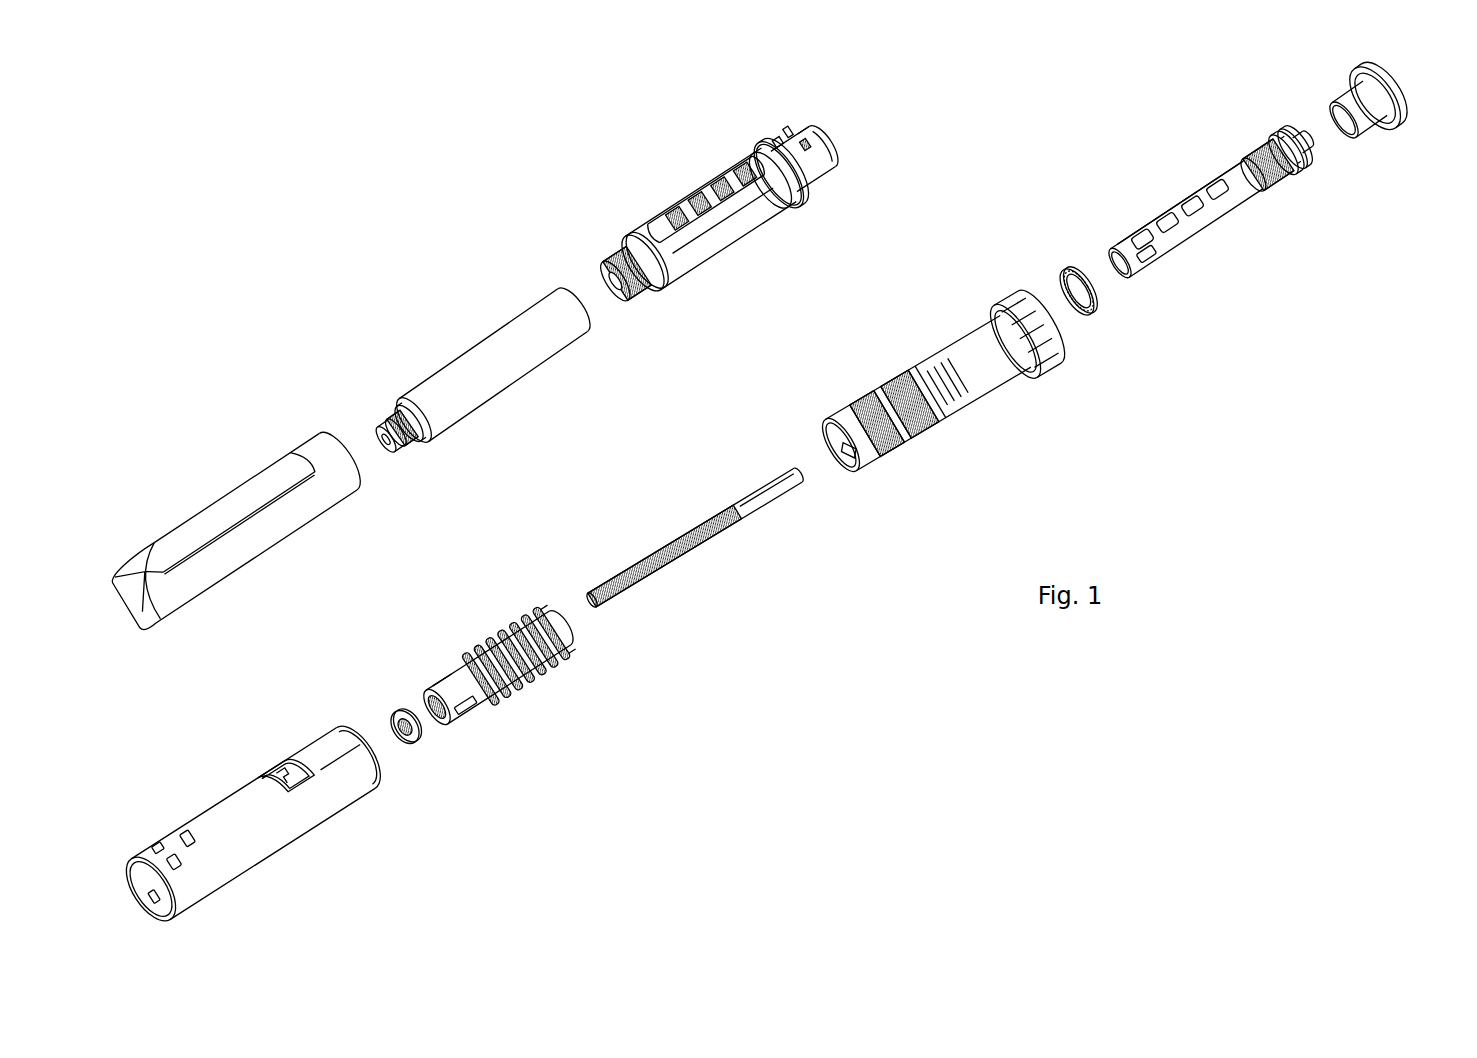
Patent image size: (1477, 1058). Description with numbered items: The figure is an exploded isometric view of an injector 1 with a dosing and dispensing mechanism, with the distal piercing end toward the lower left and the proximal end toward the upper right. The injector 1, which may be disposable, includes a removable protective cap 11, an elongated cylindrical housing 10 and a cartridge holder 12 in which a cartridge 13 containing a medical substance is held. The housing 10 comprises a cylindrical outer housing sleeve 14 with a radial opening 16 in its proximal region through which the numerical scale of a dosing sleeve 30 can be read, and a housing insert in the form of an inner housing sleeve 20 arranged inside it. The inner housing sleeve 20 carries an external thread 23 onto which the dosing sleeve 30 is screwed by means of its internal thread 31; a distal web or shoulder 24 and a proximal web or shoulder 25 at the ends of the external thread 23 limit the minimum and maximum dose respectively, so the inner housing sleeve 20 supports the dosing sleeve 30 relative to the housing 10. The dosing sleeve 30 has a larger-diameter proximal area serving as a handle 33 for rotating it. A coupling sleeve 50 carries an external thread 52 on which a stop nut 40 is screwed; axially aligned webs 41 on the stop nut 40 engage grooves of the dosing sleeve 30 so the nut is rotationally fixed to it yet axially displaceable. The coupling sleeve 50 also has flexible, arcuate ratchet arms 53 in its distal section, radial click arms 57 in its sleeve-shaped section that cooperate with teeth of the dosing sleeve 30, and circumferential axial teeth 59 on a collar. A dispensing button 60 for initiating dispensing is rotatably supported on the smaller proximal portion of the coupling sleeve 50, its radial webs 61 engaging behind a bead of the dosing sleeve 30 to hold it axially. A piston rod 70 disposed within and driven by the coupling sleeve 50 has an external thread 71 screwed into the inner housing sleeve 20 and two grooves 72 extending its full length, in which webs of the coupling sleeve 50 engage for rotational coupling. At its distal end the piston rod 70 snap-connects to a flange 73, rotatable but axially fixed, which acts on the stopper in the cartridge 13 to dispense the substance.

The injector 1 is at (331, 319).
The housing 10 is at (253, 794).
The protective cap 11 is at (232, 505).
The cartridge holder 12 is at (707, 200).
The cartridge 13 is at (480, 360).
The outer housing sleeve 14 is at (230, 800).
The opening 16 is at (294, 762).
The inner housing sleeve 20 is at (516, 681).
The external thread 23 is at (485, 645).
The distal web or shoulder 24 is at (468, 710).
The proximal web or shoulder 25 is at (572, 657).
The dosing sleeve 30 is at (944, 383).
The internal thread 31 is at (843, 460).
The handle 33 is at (1020, 315).
The stop nut 40 is at (1120, 252).
The axially aligned webs 41 is at (1097, 295).
The coupling sleeve 50 is at (1244, 189).
The external thread 52 is at (1232, 165).
The ratchet arms 53 is at (1152, 263).
The click arms 57 is at (1288, 138).
The axial teeth 59 is at (1306, 164).
The dispensing button 60 is at (1394, 139).
The radial webs 61 is at (1400, 130).
The piston rod 70 is at (695, 492).
The external thread 71 is at (650, 560).
The grooves 72 is at (782, 468).
The flange 73 is at (407, 743).